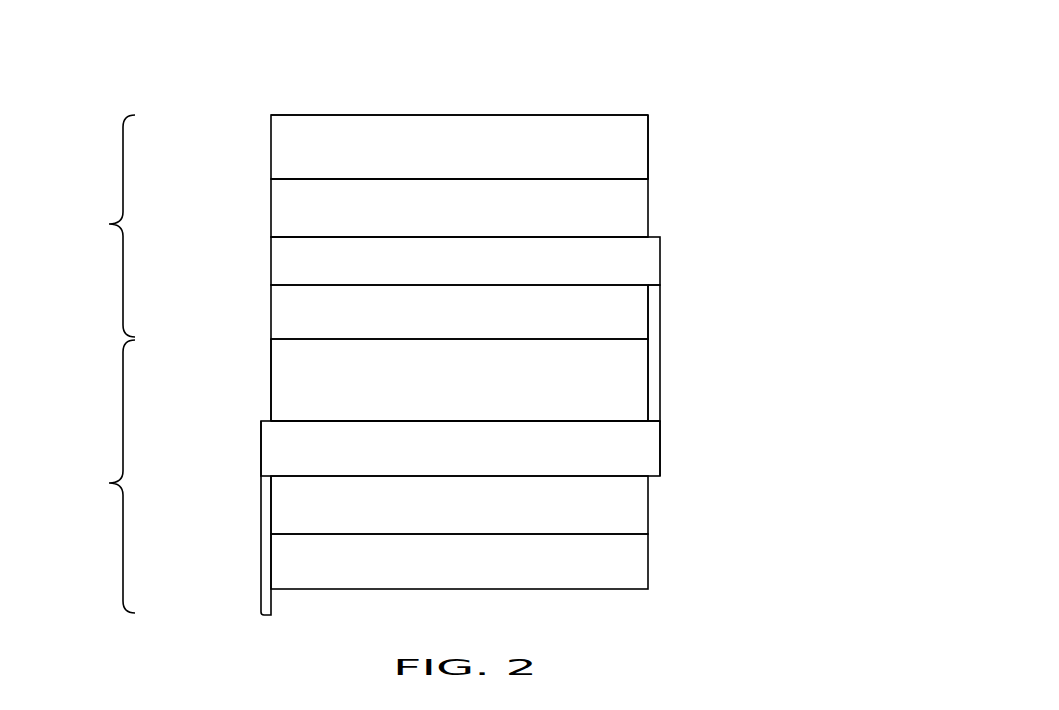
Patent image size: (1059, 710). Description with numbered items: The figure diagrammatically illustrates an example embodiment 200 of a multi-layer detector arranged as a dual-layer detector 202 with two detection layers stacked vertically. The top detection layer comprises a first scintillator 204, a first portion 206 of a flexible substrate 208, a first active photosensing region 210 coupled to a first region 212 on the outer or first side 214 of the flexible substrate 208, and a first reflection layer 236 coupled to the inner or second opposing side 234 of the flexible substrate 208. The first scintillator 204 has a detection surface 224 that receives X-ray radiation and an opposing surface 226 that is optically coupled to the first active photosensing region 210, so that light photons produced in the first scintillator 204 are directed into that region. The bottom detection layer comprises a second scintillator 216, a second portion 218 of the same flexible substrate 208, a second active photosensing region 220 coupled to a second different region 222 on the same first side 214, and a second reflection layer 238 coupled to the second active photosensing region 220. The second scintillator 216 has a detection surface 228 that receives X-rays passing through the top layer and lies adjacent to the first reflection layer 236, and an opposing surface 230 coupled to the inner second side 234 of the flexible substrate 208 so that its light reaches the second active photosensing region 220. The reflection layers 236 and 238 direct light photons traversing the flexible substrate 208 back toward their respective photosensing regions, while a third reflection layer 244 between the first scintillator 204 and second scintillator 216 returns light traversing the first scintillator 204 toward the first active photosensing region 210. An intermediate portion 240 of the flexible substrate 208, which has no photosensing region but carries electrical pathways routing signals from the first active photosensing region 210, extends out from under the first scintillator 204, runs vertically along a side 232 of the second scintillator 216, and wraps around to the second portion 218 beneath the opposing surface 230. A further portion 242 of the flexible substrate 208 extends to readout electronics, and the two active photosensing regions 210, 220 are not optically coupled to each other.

The example embodiment 200 is at (782, 71).
The dual-layer detector 202 is at (166, 68).
The first scintillator 204 is at (269, 146).
The first portion of flexible substrate 206 is at (664, 246).
The flexible substrate 208 is at (269, 262).
The first active photosensing region 210 is at (650, 192).
The first region 212 is at (262, 233).
The first side of flexible substrate 214 is at (662, 348).
The second scintillator 216 is at (269, 388).
The second portion of flexible substrate 218 is at (274, 450).
The second active photosensing region 220 is at (648, 520).
The second region 222 is at (637, 486).
The detection surface of first scintillator 224 is at (329, 115).
The opposing surface of first scintillator 226 is at (576, 168).
The detection surface of second scintillator 228 is at (315, 344).
The opposing surface of second scintillator 230 is at (627, 431).
The side of second scintillator 232 is at (635, 277).
The second side of flexible substrate 234 is at (290, 290).
The first reflection layer 236 is at (650, 313).
The second reflection layer 238 is at (648, 577).
The intermediate portion of flexible substrate 240 is at (662, 425).
The portion of flexible substrate extending to readout electronics 242 is at (650, 151).
The third reflection layer 244 is at (269, 413).